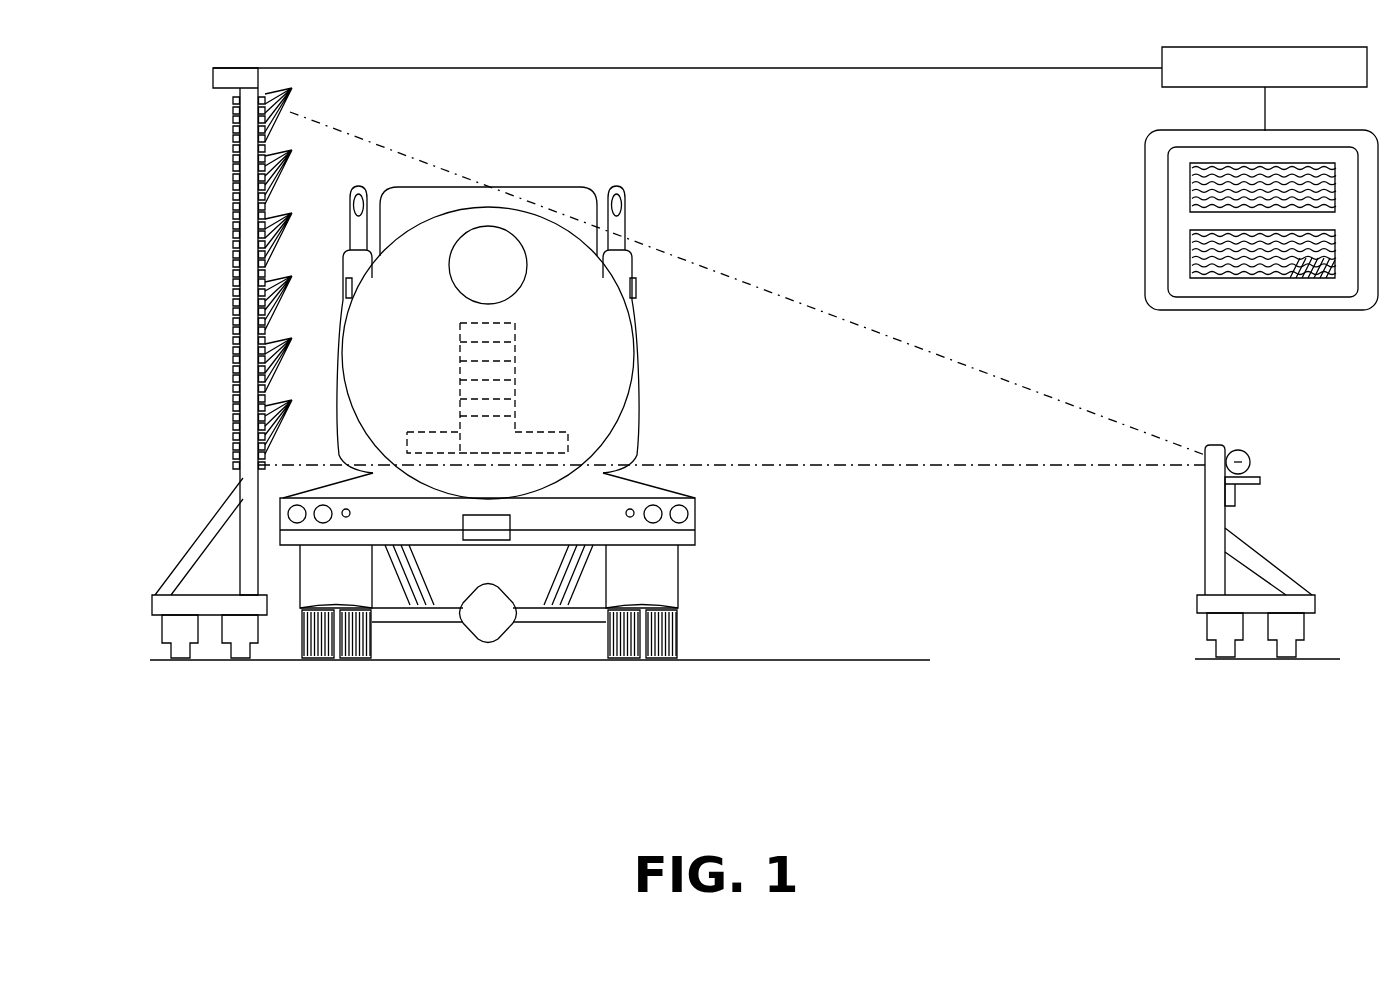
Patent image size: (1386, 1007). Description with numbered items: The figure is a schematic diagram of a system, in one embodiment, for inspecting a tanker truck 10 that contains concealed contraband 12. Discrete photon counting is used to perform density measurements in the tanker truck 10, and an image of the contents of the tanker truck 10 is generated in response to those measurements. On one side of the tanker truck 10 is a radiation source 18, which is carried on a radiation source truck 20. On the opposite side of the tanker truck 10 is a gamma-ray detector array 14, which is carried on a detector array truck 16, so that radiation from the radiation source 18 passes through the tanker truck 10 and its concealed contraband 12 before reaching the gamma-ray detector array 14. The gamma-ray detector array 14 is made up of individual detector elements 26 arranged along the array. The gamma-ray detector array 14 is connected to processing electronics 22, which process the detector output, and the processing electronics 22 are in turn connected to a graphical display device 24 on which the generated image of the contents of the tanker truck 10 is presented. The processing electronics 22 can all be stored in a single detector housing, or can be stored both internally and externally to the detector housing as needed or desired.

The tanker truck 10 is at (681, 330).
The concealed contraband 12 is at (518, 373).
The gamma-ray detector array 14 is at (143, 90).
The detector array truck 16 is at (143, 478).
The radiation source 18 is at (1233, 450).
The radiation source truck 20 is at (1338, 470).
The processing electronics 22 is at (1160, 84).
The graphical display device 24 is at (1145, 232).
The detector elements 26 is at (304, 400).